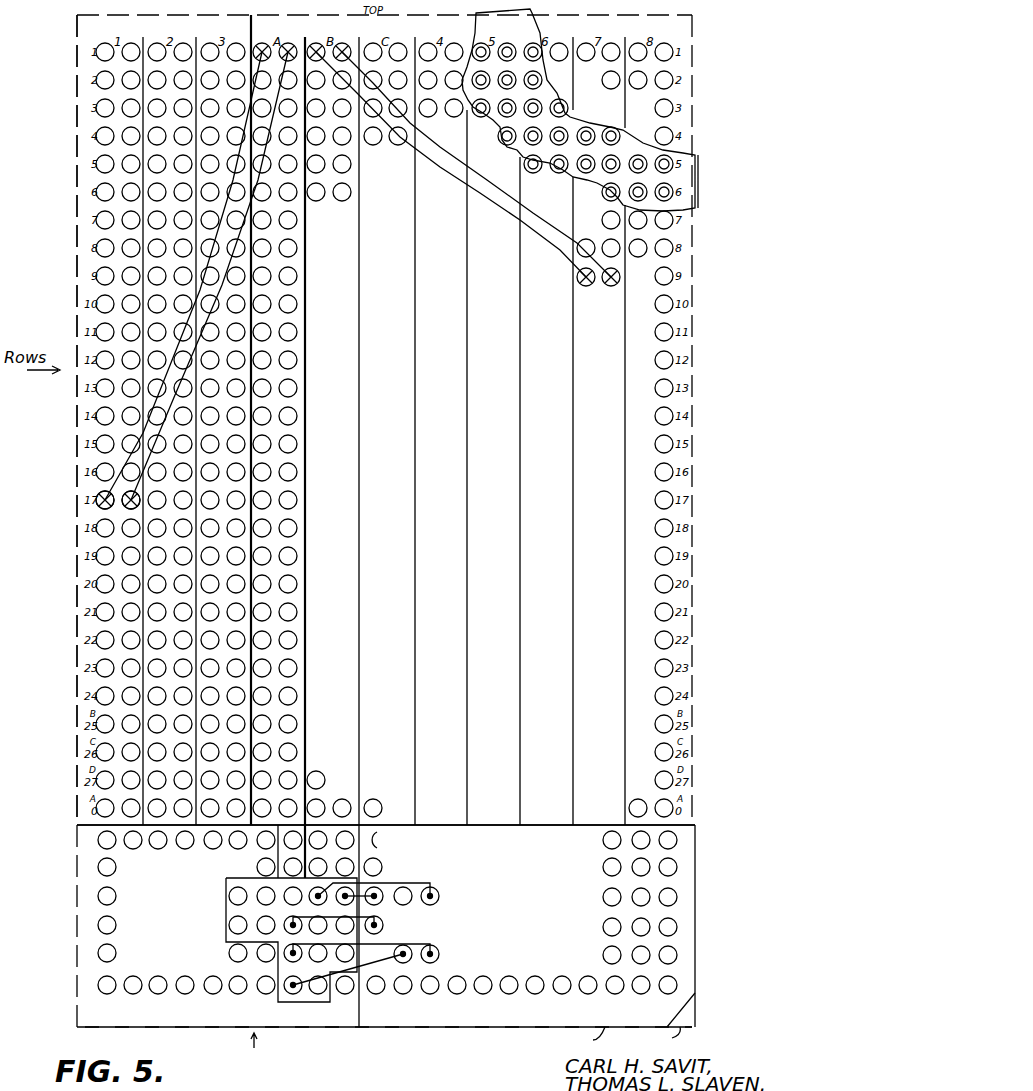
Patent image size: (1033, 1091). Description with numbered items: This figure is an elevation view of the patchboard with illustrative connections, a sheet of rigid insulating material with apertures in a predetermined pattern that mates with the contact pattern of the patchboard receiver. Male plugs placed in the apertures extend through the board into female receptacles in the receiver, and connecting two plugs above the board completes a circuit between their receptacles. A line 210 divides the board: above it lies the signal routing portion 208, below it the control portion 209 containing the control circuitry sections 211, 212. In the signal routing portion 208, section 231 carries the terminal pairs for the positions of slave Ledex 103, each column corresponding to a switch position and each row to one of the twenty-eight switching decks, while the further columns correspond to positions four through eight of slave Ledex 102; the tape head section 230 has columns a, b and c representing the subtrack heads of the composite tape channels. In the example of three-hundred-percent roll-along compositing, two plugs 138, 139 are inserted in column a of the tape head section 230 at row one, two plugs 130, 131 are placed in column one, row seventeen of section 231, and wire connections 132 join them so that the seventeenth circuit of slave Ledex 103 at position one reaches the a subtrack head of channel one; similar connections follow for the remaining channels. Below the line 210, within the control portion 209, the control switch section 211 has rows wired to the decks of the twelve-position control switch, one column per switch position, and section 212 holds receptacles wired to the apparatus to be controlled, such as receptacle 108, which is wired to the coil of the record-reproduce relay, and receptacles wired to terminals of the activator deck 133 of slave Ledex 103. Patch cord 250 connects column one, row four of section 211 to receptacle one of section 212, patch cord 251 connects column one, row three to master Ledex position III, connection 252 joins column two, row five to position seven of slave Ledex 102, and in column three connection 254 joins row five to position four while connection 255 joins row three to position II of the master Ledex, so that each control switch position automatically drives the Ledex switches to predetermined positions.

The patchboard receiver section 231 is at (384, 13).
The slave Ledex 103 is at (170, 418).
The tape head section 230 is at (436, 418).
The slave Ledex 102 is at (580, 413).
The plug 138 is at (262, 44).
The plug 139 is at (286, 74).
The plug 130 is at (100, 503).
The plug 131 is at (133, 505).
The wire connection 132 is at (130, 458).
The activator deck 133 is at (212, 310).
The signal routing portion 208 is at (515, 728).
The control portion 209 is at (424, 942).
The line 210 is at (498, 823).
The control switch section 211 is at (513, 872).
The control circuitry section 212 is at (283, 990).
The receptacle 108 is at (290, 857).
The connection 255 is at (430, 893).
The patch cord 251 is at (372, 898).
The patch cord 250 is at (292, 934).
The connection 254 is at (416, 942).
The connection 252 is at (396, 963).